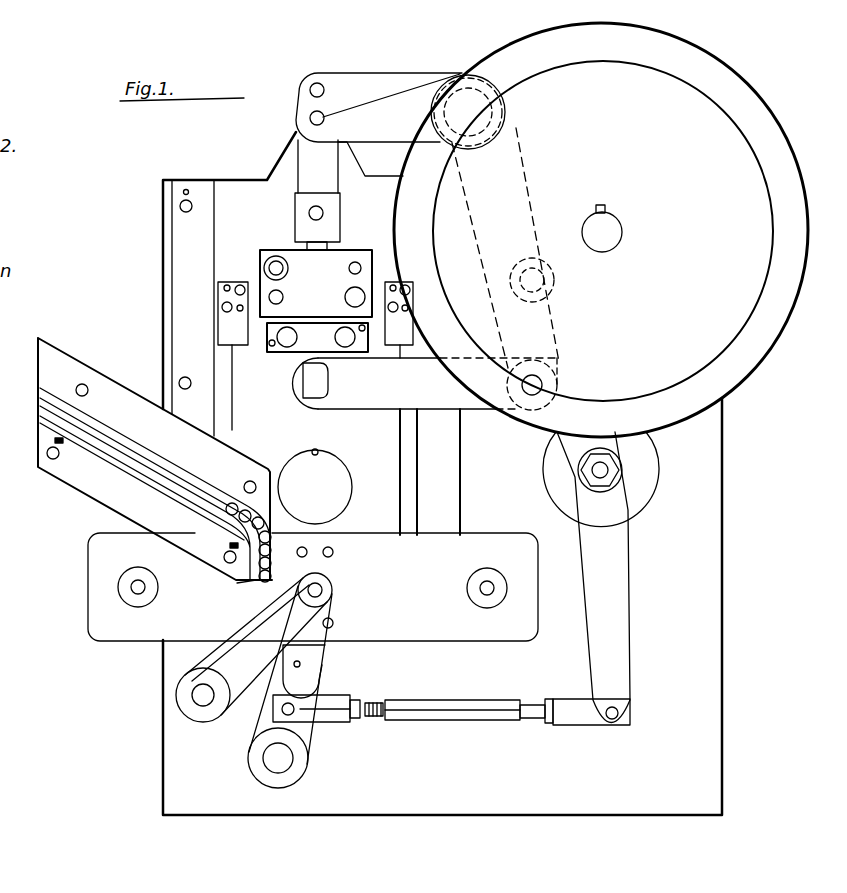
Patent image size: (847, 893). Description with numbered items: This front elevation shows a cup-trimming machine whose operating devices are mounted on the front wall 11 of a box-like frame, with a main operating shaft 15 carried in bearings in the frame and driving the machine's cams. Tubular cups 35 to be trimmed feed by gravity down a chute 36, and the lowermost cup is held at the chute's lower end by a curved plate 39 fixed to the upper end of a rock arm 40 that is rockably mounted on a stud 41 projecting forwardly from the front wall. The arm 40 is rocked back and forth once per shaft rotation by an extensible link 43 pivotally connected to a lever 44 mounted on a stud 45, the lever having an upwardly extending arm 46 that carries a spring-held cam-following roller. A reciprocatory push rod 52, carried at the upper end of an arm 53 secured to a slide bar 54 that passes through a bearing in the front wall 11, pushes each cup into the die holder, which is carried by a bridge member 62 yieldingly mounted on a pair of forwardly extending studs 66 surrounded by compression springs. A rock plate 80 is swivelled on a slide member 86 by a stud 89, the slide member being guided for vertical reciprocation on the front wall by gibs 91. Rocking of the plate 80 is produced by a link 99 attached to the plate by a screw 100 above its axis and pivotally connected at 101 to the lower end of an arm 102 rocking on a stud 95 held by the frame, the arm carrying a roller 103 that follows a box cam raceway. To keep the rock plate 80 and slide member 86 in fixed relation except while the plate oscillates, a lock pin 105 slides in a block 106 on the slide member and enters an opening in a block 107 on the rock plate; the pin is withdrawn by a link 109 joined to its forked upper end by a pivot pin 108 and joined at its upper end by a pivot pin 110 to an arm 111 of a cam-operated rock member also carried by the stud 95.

The front wall 11 is at (722, 496).
The main operating shaft 15 is at (622, 233).
The cups 35 is at (228, 505).
The chute 36 is at (55, 367).
The curved plate 39 is at (251, 583).
The rock arm 40 is at (315, 672).
The stud 41 is at (285, 766).
The extensible link 43 is at (425, 705).
The lever 44 is at (612, 614).
The stud 45 is at (622, 469).
The upwardly extending arm 46 is at (578, 443).
The reciprocatory rod 52 is at (322, 590).
The arm 53 is at (245, 633).
The slide bar 54 is at (205, 702).
The bridge member 62 is at (468, 628).
The studs 66 is at (507, 588).
The rock plate 80 is at (380, 497).
The slide member 86 is at (243, 187).
The stud 89 is at (330, 511).
The gibs 91 is at (203, 187).
The stud 95 is at (505, 113).
The link 99 is at (397, 392).
The screw 100 is at (303, 388).
The pivotal connection 101 is at (558, 368).
The arm 102 is at (527, 182).
The roller 103 is at (554, 278).
The lock pin 105 is at (336, 250).
The block 106 is at (263, 260).
The block 107 is at (300, 347).
The pivot pin 108 is at (308, 214).
The link 109 is at (310, 177).
The pivot pin 110 is at (322, 115).
The arm 111 is at (388, 100).